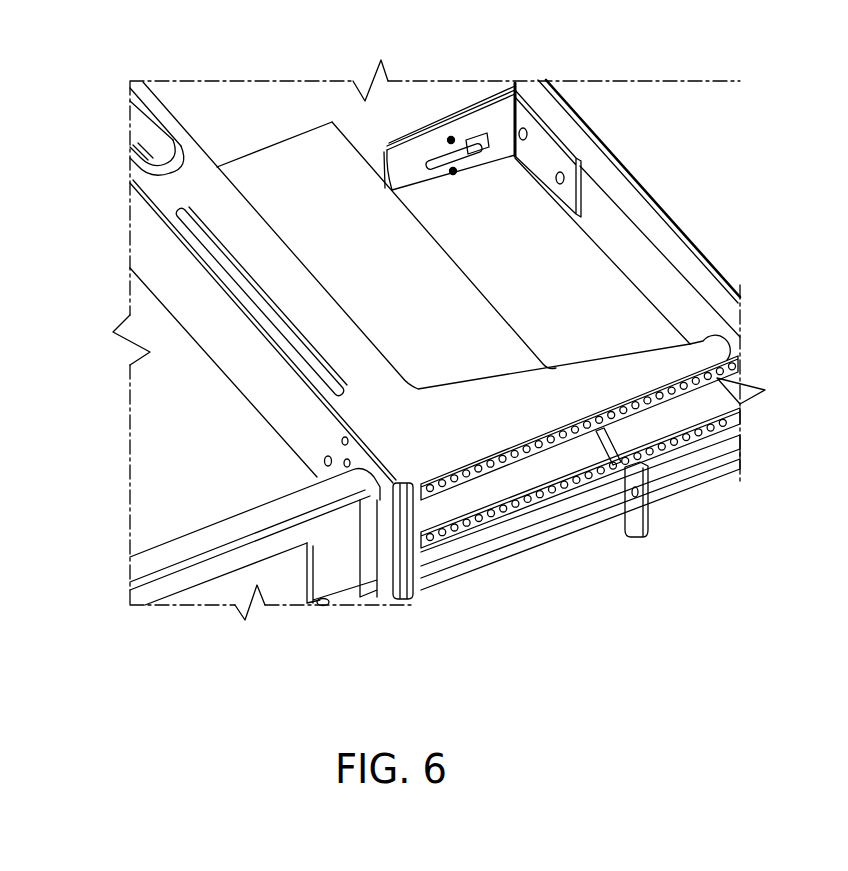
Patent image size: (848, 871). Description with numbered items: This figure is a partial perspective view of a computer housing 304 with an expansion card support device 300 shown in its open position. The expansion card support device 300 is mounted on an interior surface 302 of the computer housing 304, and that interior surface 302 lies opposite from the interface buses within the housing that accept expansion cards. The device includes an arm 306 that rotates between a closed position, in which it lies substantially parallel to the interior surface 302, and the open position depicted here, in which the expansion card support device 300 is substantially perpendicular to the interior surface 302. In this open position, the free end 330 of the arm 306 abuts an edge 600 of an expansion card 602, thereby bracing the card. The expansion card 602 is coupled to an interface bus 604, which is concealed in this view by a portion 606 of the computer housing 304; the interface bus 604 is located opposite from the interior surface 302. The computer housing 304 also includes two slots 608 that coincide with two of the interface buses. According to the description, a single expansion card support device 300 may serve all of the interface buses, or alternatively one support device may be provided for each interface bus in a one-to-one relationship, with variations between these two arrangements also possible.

The expansion card support device 300 is at (515, 175).
The interior surface 302 is at (672, 294).
The computer housing 304 is at (646, 110).
The arm 306 is at (493, 130).
The free end 330 is at (387, 140).
The edge 600 is at (353, 143).
The expansion card 602 is at (287, 172).
The interface bus 604 is at (190, 289).
The portion 606 is at (283, 410).
The slots 608 is at (535, 530).